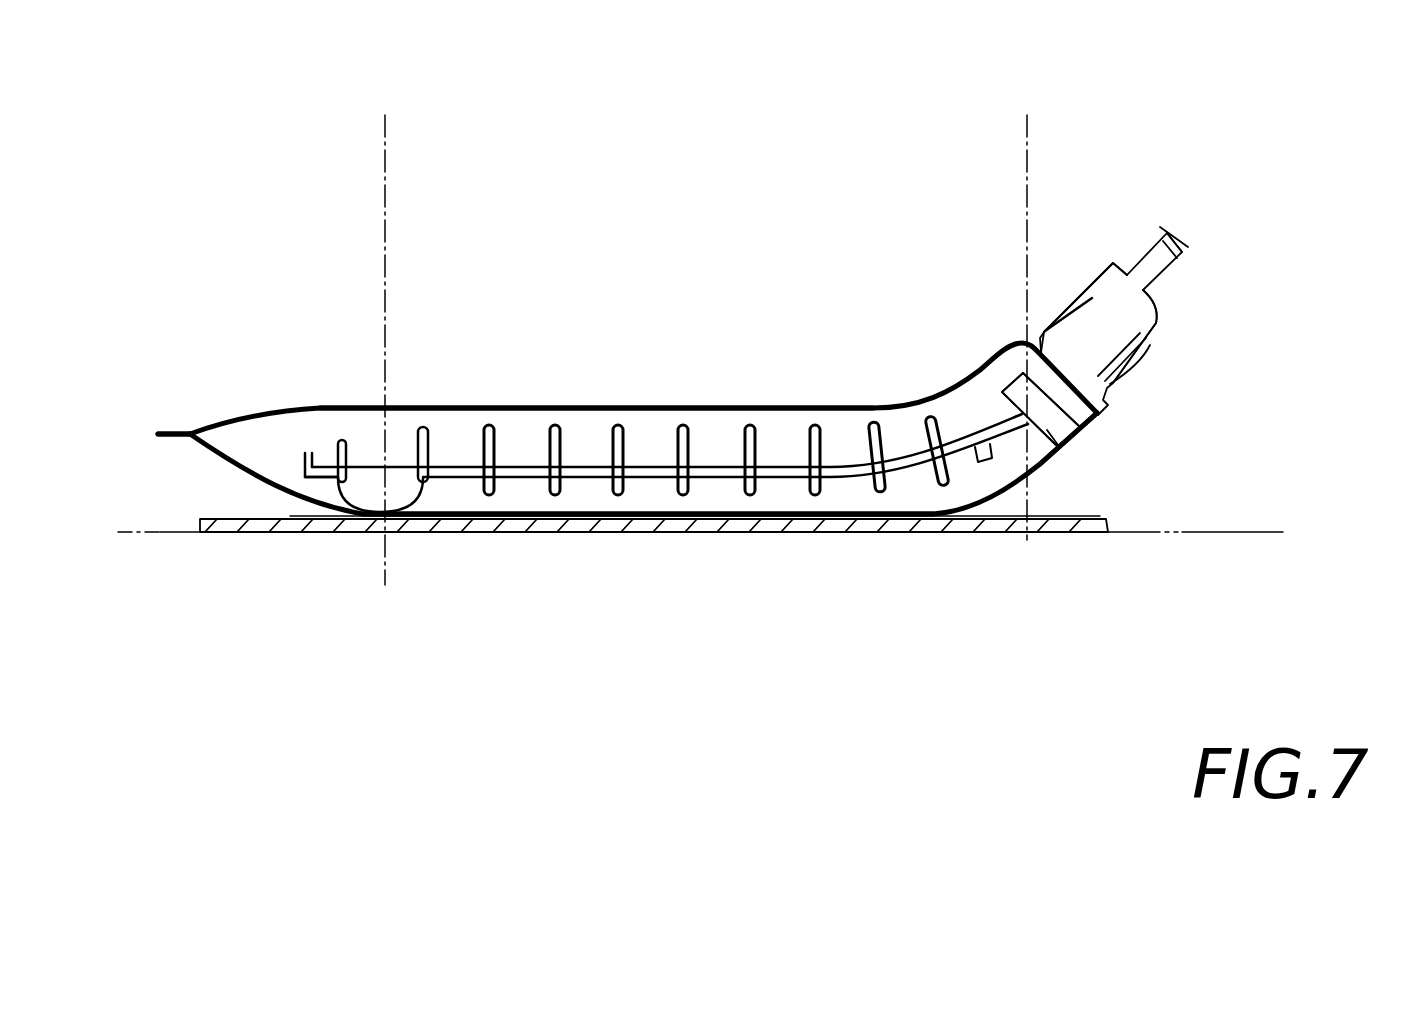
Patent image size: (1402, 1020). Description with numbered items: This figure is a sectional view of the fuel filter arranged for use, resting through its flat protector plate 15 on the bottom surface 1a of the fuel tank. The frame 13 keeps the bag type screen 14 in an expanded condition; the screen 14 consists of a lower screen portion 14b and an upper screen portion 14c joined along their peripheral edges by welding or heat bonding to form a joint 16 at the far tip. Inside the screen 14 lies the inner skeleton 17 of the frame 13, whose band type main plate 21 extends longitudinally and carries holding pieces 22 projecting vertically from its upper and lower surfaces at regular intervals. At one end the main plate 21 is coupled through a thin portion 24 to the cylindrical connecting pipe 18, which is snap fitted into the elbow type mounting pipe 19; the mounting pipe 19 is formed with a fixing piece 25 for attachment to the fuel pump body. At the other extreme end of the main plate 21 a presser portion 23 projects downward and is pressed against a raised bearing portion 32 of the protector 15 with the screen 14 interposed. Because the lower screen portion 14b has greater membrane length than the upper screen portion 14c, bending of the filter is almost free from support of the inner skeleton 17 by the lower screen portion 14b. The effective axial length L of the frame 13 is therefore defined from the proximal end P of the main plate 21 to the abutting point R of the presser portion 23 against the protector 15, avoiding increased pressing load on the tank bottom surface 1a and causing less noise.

The bottom surface 1a is at (1217, 532).
The frame 13 is at (1018, 229).
The screen 14 is at (843, 407).
The lower screen portion 14b is at (494, 519).
The upper screen portion 14c is at (575, 407).
The protector plate 15 is at (612, 532).
The joint 16 is at (175, 432).
The inner skeleton 17 is at (949, 434).
The connecting pipe 18 is at (1068, 448).
The mounting pipe 19 is at (1090, 293).
The main plate 21 is at (718, 467).
The holding pieces 22 is at (630, 420).
The presser portion 23 is at (373, 483).
The thin portion 24 is at (1020, 422).
The fixing piece 25 is at (1163, 237).
The bearing portions 32 is at (290, 516).
The abutting point R is at (387, 535).
The proximal end P is at (1072, 405).
The effective axial length L is at (1027, 143).